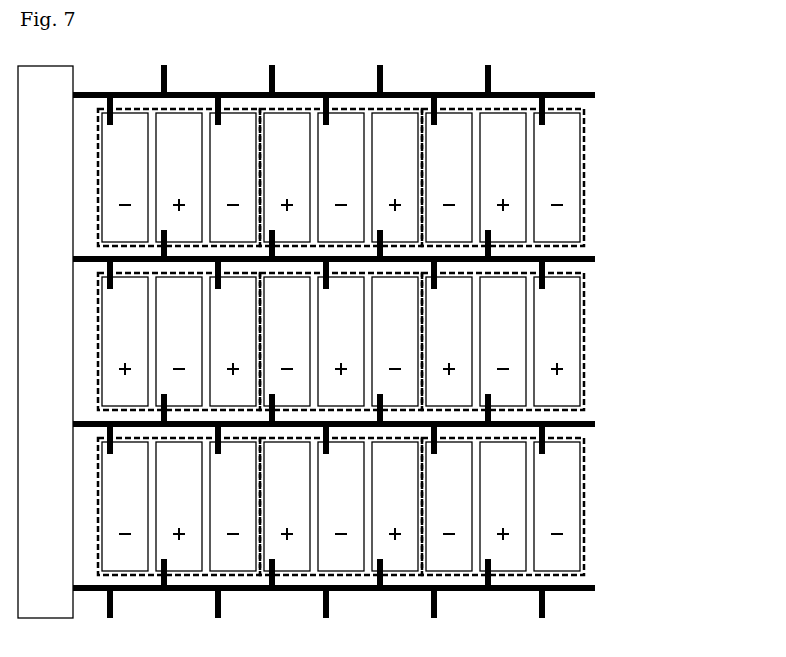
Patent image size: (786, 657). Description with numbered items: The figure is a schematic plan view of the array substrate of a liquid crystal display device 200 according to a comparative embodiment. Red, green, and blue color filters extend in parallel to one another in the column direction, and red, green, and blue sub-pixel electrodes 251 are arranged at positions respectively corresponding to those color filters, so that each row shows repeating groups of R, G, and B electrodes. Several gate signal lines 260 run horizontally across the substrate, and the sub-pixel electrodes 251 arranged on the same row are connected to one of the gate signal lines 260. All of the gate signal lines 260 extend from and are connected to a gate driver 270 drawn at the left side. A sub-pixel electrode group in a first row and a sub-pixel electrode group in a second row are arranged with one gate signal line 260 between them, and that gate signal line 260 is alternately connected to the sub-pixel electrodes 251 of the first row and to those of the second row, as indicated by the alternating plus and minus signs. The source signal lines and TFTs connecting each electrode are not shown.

The liquid crystal display device 200 is at (731, 78).
The sub-pixel electrode 251 is at (341, 342).
The gate signal line 260 is at (580, 90).
The gate driver 270 is at (45, 342).